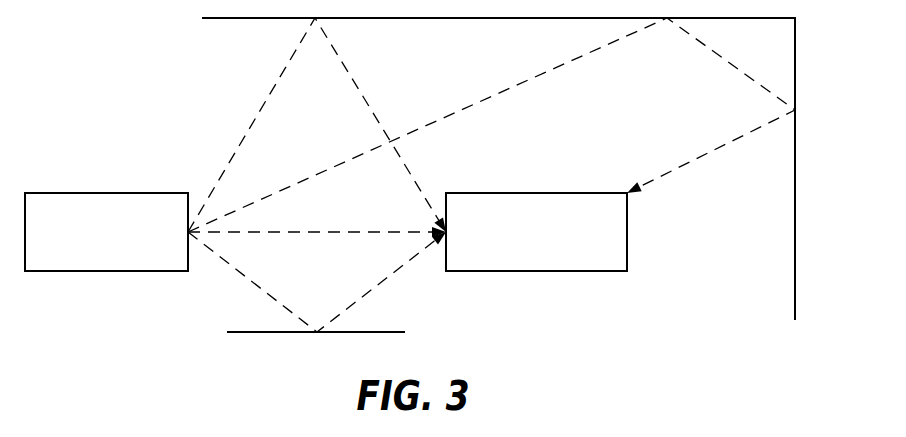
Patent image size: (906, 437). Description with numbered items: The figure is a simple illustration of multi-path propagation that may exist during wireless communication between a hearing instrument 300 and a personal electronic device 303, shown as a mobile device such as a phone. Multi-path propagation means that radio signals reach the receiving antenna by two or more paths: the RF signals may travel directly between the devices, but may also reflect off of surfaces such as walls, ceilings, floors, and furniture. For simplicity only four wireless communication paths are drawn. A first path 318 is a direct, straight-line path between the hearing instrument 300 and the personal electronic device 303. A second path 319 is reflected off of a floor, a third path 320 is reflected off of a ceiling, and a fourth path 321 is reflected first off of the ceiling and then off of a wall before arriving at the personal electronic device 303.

The hearing instrument 300 is at (108, 193).
The personal electronic device 303 is at (536, 193).
The first path 318 is at (305, 232).
The second path 319 is at (360, 300).
The third path 320 is at (347, 70).
The fourth path 321 is at (740, 70).